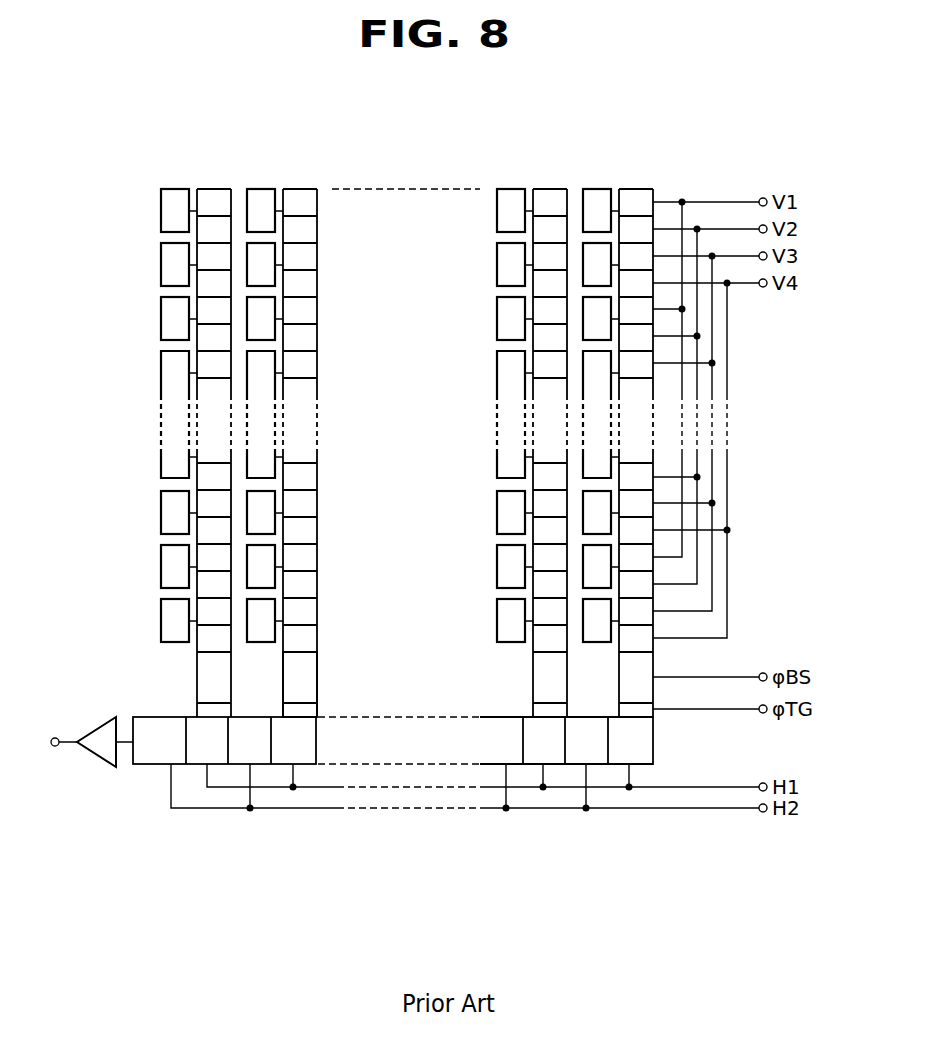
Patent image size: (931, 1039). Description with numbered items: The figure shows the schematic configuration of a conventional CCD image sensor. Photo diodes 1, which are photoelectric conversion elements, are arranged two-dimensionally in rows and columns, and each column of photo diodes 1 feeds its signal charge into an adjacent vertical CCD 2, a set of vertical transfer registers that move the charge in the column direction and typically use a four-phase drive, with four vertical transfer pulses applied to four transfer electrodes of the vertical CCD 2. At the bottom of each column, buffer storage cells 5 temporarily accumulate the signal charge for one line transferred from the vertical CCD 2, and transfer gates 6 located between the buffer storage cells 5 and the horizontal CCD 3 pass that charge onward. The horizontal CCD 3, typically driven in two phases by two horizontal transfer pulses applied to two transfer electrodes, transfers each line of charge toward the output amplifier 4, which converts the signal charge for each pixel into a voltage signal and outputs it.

The photo diodes 1 is at (176, 189).
The vertical CCD 2 is at (216, 189).
The horizontal CCD 3 is at (653, 742).
The output amplifier 4 is at (100, 722).
The buffer storage cells 5 is at (318, 663).
The transfer gates 6 is at (318, 712).